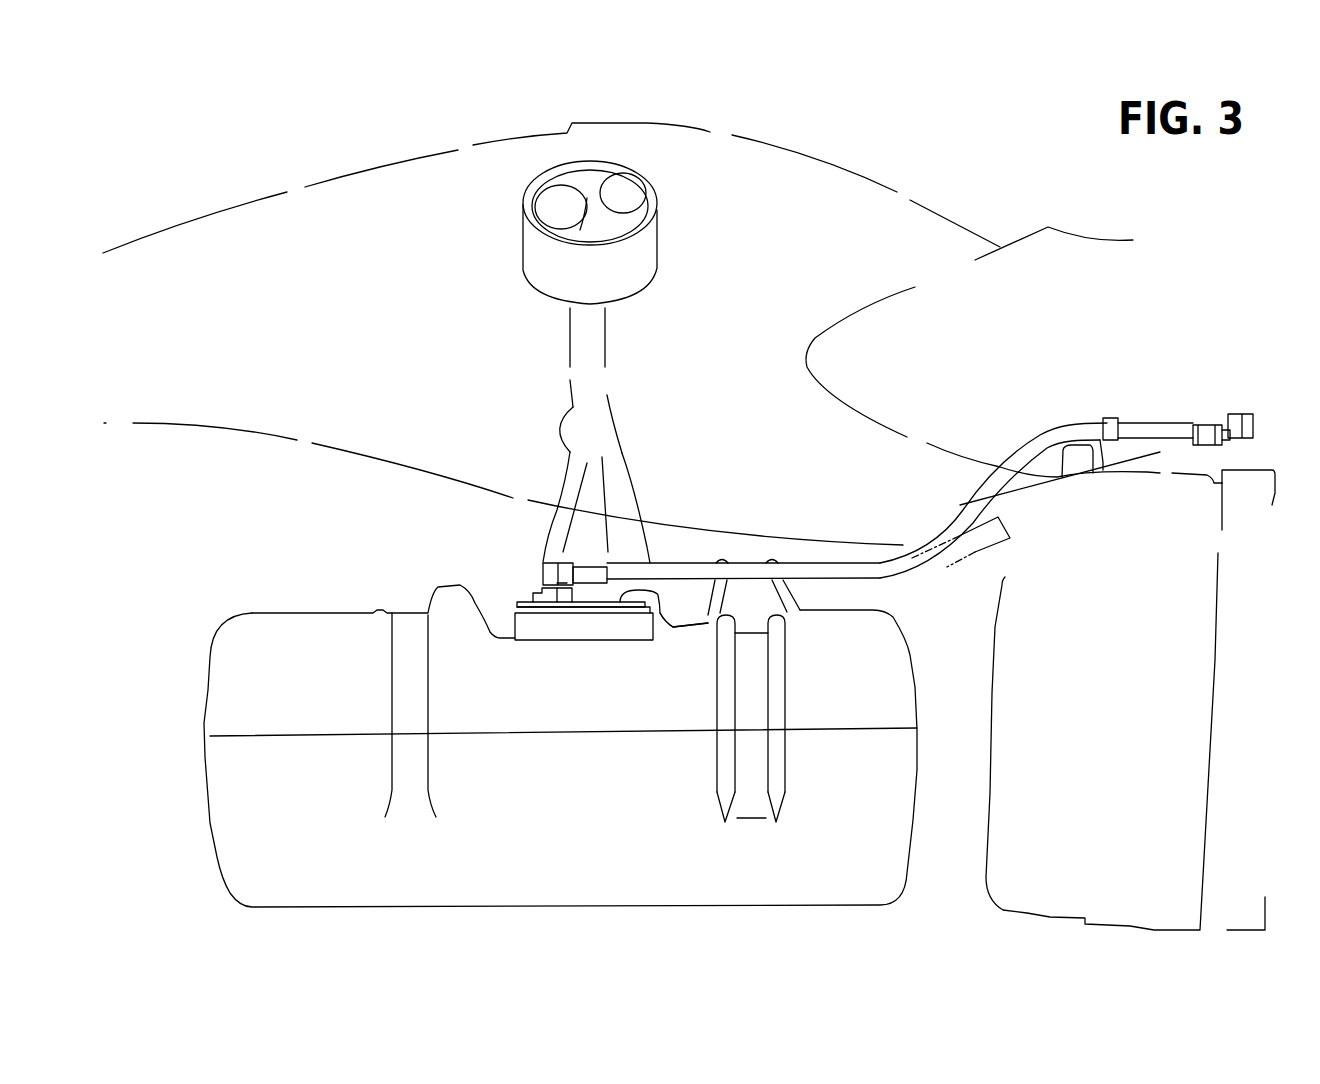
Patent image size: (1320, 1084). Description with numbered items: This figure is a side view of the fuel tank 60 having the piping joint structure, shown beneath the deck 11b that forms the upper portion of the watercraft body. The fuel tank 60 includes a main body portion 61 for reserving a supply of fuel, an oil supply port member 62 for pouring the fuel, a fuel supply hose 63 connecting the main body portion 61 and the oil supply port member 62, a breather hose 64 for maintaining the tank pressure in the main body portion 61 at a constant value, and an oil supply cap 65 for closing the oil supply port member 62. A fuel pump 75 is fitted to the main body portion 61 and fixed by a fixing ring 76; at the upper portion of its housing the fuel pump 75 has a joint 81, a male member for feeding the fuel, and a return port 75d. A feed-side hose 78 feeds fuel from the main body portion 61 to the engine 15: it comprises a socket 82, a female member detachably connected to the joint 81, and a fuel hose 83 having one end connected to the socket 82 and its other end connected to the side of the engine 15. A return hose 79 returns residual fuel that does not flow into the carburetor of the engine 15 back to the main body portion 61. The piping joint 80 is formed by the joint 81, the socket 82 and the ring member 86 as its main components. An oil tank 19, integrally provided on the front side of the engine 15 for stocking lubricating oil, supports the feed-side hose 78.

The deck 11b is at (243, 205).
The engine 15 is at (1140, 435).
The oil tank 19 is at (1172, 473).
The fuel tank 60 is at (402, 345).
The main body portion 61 is at (313, 610).
The oil supply port member 62 is at (657, 262).
The fuel supply hose 63 is at (605, 343).
The breather hose 64 is at (573, 407).
The oil supply cap 65 is at (643, 183).
The fuel pump 75 is at (667, 617).
The return port 75d is at (543, 570).
The fixing ring 76 is at (535, 622).
The feed-side hose 78 is at (793, 553).
The return hose 79 is at (943, 533).
The piping joint 80 is at (557, 507).
The joint 81 is at (567, 568).
The socket 82 is at (613, 568).
The fuel hose 83 is at (838, 563).
The ring member 86 is at (583, 560).